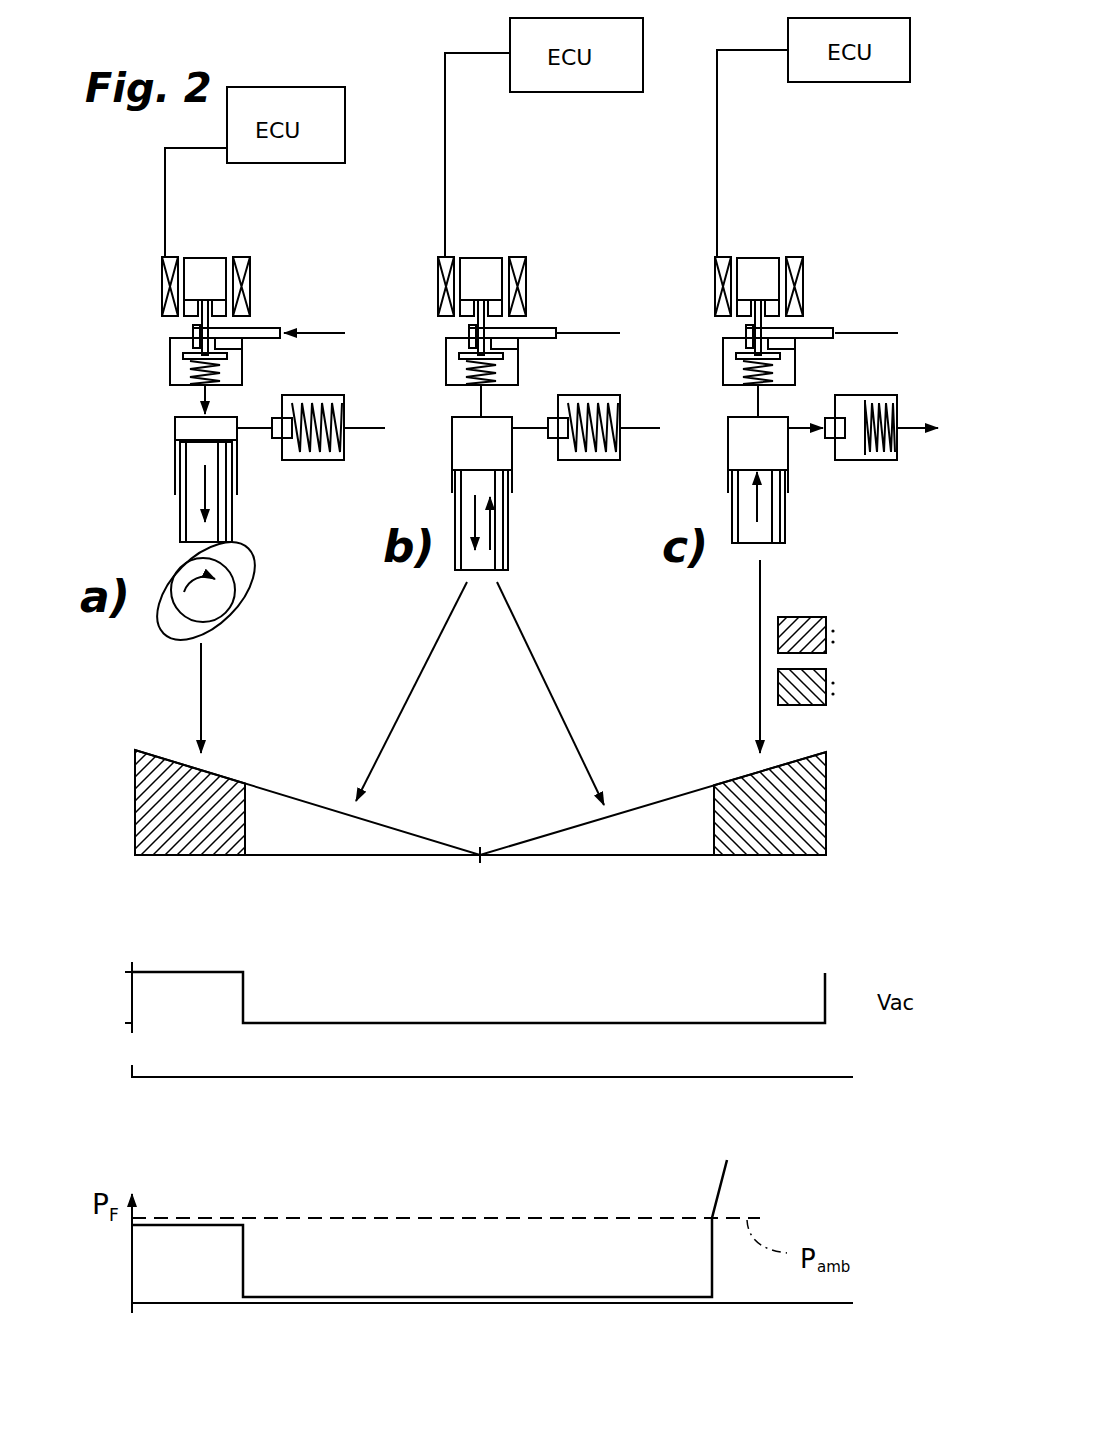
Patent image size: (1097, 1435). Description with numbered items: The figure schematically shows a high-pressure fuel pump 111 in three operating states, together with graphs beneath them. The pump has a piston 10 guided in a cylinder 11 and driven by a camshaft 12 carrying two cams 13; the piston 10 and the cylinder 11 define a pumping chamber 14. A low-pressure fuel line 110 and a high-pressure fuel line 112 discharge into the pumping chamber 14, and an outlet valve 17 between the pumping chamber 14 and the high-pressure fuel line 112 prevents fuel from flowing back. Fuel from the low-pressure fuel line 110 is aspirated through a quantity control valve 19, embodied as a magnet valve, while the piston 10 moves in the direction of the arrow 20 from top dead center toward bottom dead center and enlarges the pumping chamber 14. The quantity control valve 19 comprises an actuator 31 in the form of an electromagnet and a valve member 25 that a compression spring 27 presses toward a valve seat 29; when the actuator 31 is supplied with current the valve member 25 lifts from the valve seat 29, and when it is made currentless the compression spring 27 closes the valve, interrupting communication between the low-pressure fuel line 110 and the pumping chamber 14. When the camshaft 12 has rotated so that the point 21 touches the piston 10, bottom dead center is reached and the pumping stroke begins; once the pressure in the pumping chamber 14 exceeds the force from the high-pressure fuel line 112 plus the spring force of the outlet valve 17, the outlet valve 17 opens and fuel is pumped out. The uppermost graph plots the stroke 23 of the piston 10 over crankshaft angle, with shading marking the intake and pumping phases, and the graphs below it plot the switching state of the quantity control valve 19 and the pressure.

The piston 10 is at (201, 491).
The cylinder 11 is at (178, 458).
The camshaft 12 is at (222, 607).
The cams 13 is at (248, 548).
The pumping chamber 14 is at (178, 428).
The outlet valve 17 is at (317, 461).
The quantity control valve 19 is at (162, 339).
The arrow 20 is at (198, 487).
The point 21 is at (187, 568).
The stroke 23 is at (134, 814).
The valve member 25 is at (184, 353).
The compression spring 27 is at (190, 372).
The valve seat 29 is at (228, 349).
The actuator 31 is at (262, 256).
The low-pressure fuel line 110 is at (270, 328).
The high-pressure fuel pump 111 is at (236, 224).
The high-pressure fuel line 112 is at (370, 427).